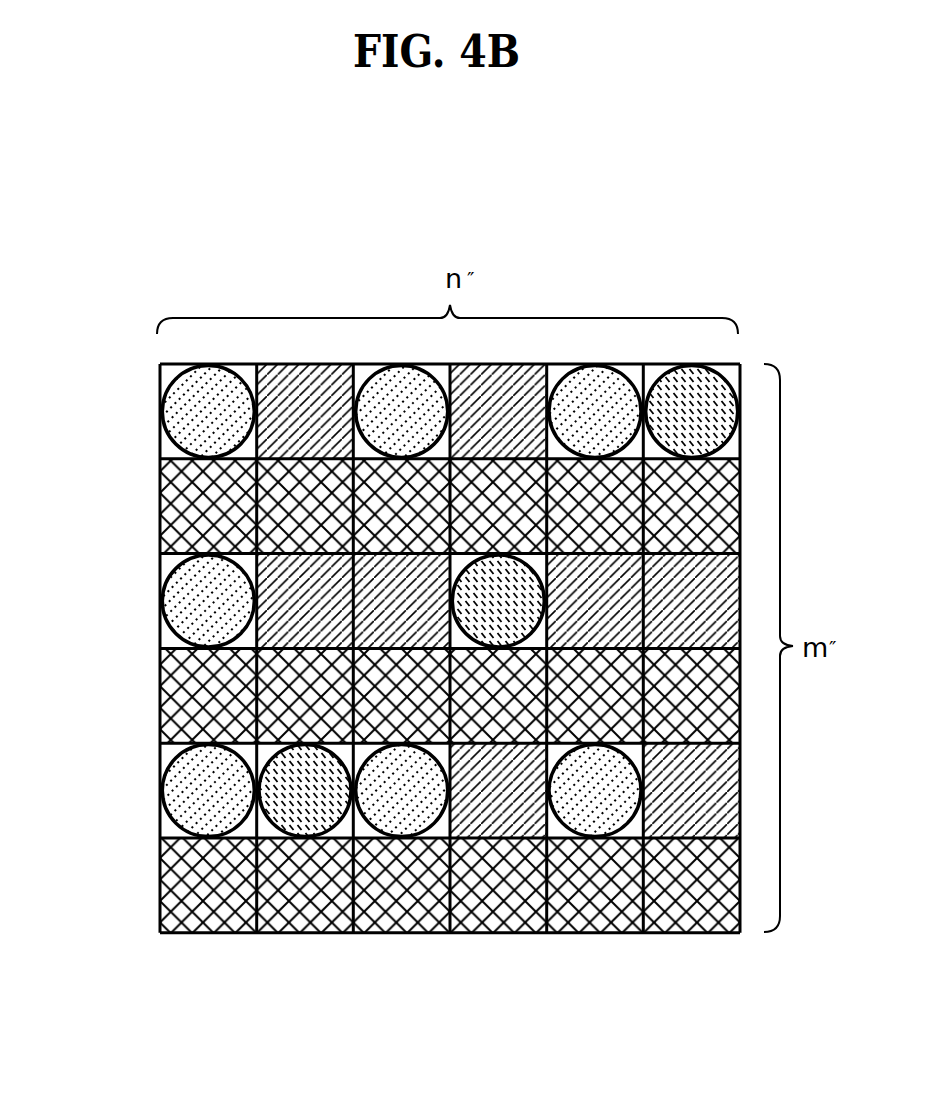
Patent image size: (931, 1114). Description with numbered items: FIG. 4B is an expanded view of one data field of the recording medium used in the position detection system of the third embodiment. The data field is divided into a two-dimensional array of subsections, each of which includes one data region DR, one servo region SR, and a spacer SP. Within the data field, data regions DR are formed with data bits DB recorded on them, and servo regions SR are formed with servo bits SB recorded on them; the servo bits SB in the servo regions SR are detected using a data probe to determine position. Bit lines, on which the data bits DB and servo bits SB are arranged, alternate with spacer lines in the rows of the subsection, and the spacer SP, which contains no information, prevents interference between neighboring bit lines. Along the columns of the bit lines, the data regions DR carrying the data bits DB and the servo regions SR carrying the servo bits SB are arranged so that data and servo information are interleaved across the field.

The data region DR is at (176, 379).
The servo region SR is at (283, 468).
The spacer SP is at (178, 538).
The data bit DB is at (178, 793).
The servo bit SB is at (297, 836).